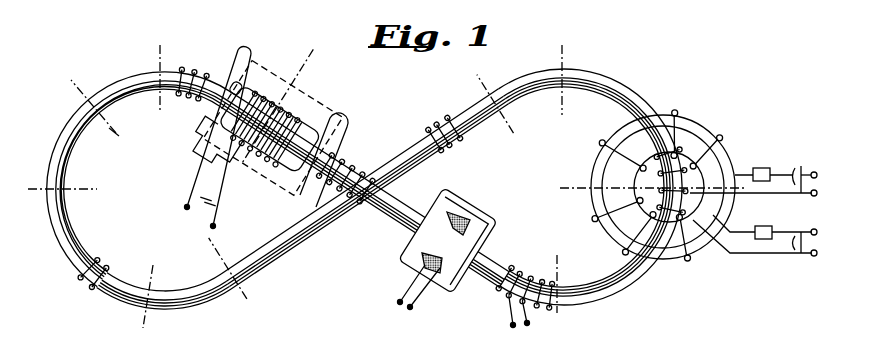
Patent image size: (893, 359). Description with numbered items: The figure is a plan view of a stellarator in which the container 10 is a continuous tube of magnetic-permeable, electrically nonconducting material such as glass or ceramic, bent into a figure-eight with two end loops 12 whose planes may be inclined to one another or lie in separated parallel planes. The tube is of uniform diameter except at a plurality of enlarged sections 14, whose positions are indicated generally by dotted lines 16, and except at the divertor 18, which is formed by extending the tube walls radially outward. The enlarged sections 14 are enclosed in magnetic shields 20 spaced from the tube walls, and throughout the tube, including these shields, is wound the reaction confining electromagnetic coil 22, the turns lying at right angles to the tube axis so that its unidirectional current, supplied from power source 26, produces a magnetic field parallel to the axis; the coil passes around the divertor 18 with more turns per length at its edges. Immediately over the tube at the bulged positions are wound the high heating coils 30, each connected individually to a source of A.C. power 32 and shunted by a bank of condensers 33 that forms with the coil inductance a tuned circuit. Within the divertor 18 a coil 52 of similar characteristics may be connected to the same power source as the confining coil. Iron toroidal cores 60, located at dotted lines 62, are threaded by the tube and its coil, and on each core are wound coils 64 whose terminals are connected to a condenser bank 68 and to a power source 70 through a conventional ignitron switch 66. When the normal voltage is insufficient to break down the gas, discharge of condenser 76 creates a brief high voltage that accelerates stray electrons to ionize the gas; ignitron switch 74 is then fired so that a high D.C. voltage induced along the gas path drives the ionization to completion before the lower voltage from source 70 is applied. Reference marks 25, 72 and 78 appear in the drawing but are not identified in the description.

The container 10 is at (364, 182).
The end loops 12 is at (82, 243).
The enlarged sections 14 is at (328, 110).
The dotted lines 16 is at (313, 52).
The divertor 18 is at (430, 240).
The magnetic shields 20 is at (210, 146).
The reaction confining electromagnetic coil 22 is at (200, 74).
The joint 25 is at (558, 320).
The power source 26 is at (409, 310).
The high heating coils 30 is at (232, 108).
The source of A.C. power 32 is at (213, 226).
The bank of condensers 33 is at (222, 207).
The coil 52 is at (443, 260).
The iron toroidal cores 60 is at (700, 137).
The dotted lines 62 is at (82, 190).
The coils 64 is at (158, 112).
The ignitron switch 66 is at (762, 168).
The condenser bank 68 is at (795, 171).
The power source 70 is at (810, 166).
The resistor 72 is at (758, 226).
The ignitron switch 74 is at (797, 231).
The condenser 76 is at (795, 251).
The terminal 78 is at (812, 258).